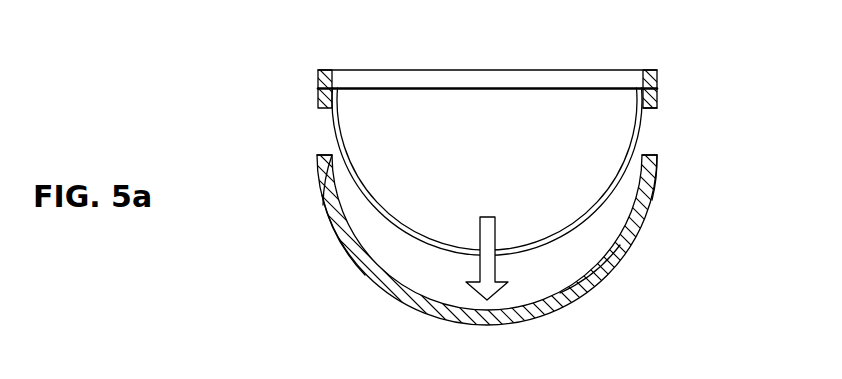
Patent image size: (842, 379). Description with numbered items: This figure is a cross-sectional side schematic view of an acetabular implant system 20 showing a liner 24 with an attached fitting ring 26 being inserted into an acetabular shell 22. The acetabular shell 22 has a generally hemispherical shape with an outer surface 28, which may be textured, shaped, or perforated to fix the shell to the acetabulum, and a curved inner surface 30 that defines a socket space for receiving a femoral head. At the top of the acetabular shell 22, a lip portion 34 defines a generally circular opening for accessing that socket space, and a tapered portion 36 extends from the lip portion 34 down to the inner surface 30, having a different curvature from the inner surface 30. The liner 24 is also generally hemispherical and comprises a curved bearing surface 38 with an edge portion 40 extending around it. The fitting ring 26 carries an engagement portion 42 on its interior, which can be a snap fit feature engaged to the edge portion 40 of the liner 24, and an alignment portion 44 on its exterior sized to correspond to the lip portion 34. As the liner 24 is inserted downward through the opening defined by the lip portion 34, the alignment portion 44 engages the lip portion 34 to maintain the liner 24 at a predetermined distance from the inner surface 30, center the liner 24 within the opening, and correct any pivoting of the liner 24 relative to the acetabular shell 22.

The acetabular implant system 20 is at (678, 40).
The acetabular shell 22 is at (405, 317).
The liner 24 is at (322, 204).
The fitting ring 26 is at (323, 60).
The outer surface 28 is at (350, 257).
The inner surface 30 is at (592, 283).
The lip portion 34 is at (657, 170).
The tapered portion 36 is at (302, 90).
The bearing surface 38 is at (580, 200).
The edge portion 40 is at (655, 146).
The engagement portion 42 is at (658, 92).
The alignment portion 44 is at (660, 118).